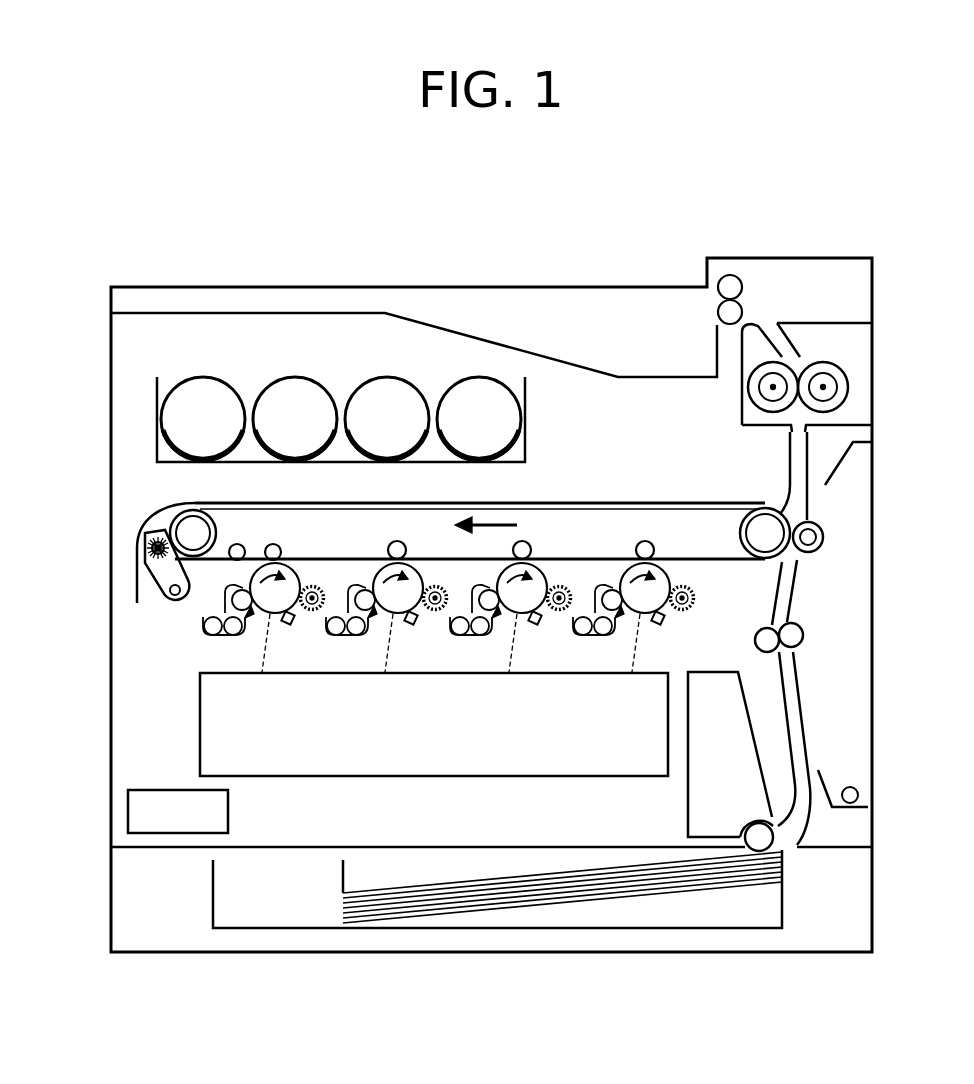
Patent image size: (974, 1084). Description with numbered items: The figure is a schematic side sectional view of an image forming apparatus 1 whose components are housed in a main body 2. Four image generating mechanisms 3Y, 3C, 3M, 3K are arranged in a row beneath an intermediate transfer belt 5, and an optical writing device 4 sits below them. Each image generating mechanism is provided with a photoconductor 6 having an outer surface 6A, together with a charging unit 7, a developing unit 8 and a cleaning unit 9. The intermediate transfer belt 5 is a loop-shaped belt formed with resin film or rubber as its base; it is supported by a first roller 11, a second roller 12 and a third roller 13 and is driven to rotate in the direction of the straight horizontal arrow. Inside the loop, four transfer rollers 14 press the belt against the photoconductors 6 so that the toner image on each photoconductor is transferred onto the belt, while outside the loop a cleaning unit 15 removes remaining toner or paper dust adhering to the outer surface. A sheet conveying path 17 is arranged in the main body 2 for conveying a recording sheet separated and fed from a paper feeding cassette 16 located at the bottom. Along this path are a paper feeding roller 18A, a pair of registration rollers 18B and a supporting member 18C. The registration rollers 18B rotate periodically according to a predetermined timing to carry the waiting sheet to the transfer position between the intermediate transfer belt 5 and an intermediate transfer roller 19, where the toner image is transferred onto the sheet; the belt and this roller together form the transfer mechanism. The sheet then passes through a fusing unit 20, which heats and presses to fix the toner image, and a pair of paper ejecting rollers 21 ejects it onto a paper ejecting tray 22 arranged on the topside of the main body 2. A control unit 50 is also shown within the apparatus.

The image forming apparatus 1 is at (836, 222).
The main body 2 is at (111, 345).
The image generating mechanism 3Y is at (308, 570).
The image generating mechanism 3C is at (431, 570).
The image generating mechanism 3M is at (555, 570).
The image generating mechanism 3K is at (678, 570).
The optical writing device 4 is at (190, 729).
The intermediate transfer belt 5 is at (225, 503).
The photoconductor 6 is at (299, 568).
The outer surface 6A is at (220, 596).
The charging unit 7 is at (290, 626).
The developing unit 8 is at (210, 632).
The cleaning unit 9 is at (322, 580).
The first roller 11 is at (758, 554).
The second roller 12 is at (183, 527).
The third roller 13 is at (237, 544).
The transfer rollers 14 is at (273, 544).
The cleaning unit 15 is at (137, 548).
The paper feeding cassette 16 is at (782, 905).
The sheet conveying path 17 is at (790, 712).
The paper feeding roller 18A is at (775, 848).
The pair of registration rollers 18B is at (803, 635).
The supporting member 18C is at (688, 815).
The intermediate transfer roller 19 is at (823, 537).
The fusing unit 20 is at (832, 323).
The pair of paper ejecting rollers 21 is at (738, 274).
The paper ejecting tray 22 is at (584, 370).
The control unit 50 is at (228, 812).